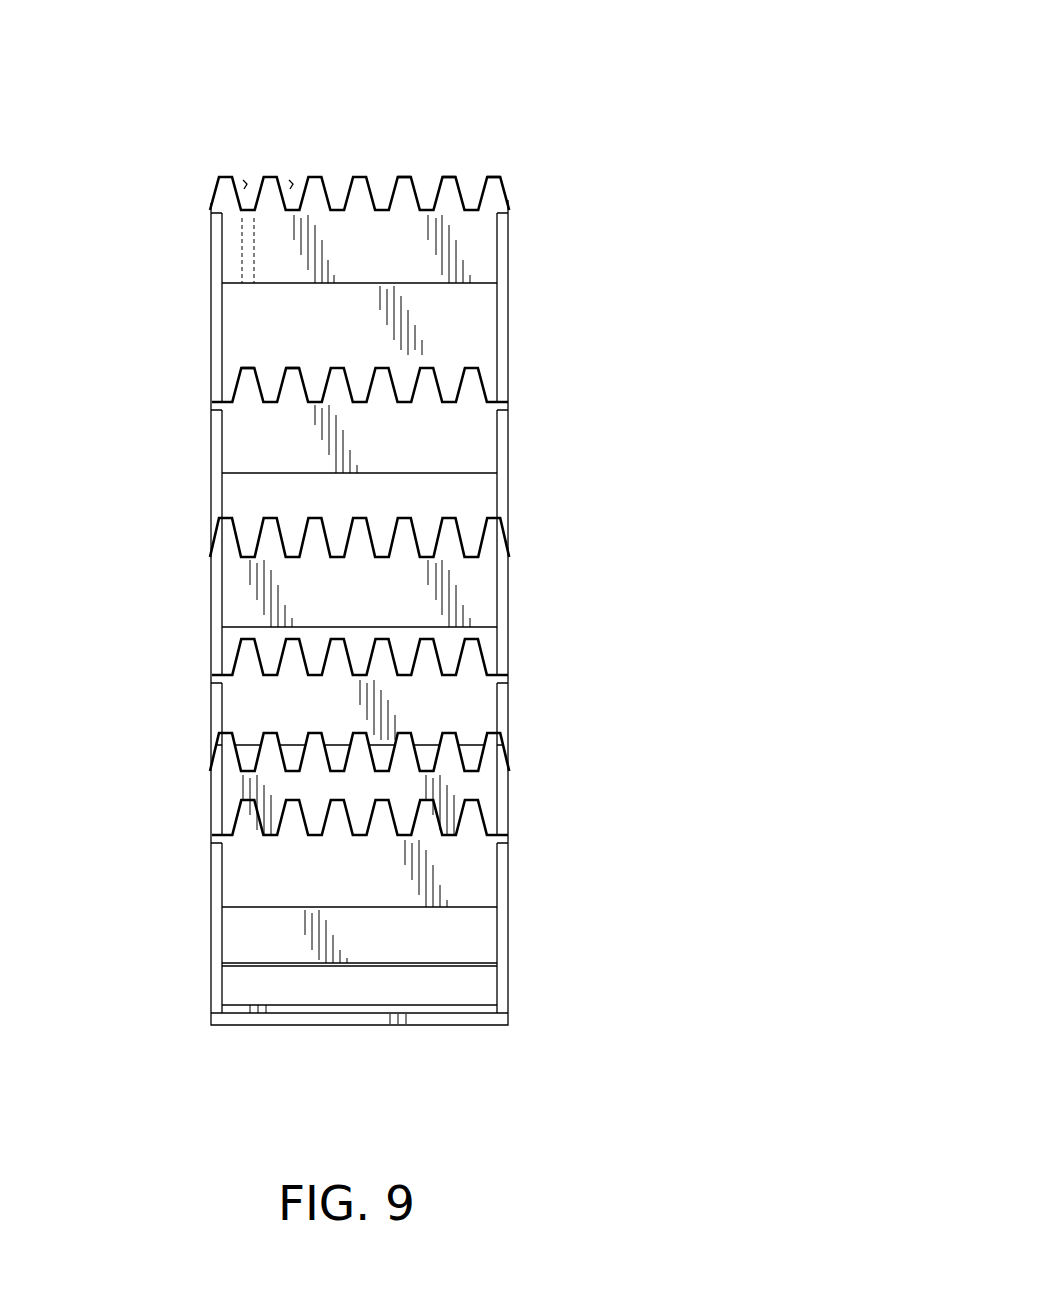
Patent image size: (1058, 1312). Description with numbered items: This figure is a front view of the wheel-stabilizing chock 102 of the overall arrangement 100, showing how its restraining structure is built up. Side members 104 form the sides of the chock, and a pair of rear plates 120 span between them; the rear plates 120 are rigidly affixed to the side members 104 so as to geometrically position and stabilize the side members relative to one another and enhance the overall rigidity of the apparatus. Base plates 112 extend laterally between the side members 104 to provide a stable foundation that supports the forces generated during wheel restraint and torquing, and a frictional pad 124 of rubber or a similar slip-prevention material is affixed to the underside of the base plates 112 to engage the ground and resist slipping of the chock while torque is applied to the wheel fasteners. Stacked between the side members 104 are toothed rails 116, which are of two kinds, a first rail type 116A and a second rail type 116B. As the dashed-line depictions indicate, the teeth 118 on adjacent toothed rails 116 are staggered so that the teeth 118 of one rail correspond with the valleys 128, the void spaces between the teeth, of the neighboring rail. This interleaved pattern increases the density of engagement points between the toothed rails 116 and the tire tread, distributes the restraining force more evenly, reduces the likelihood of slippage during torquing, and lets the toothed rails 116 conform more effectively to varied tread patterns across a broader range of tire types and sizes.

The battery assembly 100 is at (526, 66).
The wheel-stabilizing chock 102 is at (594, 101).
The side members 104 is at (507, 342).
The base plates 112 is at (478, 1013).
The toothed rails 116 is at (228, 245).
The first rail type 116A is at (485, 243).
The second rail type 116B is at (485, 440).
The teeth 118 is at (405, 176).
The rear plates 120 is at (433, 327).
The frictional pad 124 is at (435, 1025).
The valleys 128 is at (295, 182).